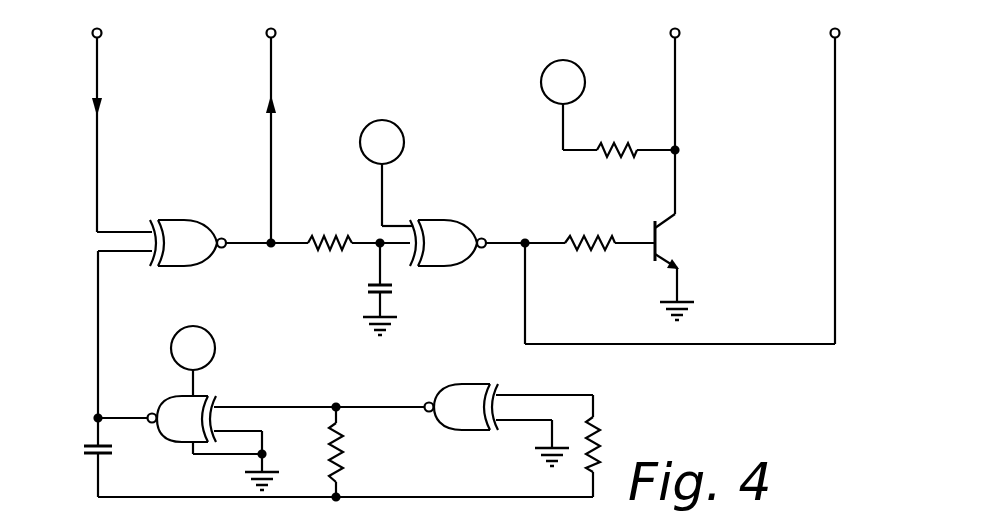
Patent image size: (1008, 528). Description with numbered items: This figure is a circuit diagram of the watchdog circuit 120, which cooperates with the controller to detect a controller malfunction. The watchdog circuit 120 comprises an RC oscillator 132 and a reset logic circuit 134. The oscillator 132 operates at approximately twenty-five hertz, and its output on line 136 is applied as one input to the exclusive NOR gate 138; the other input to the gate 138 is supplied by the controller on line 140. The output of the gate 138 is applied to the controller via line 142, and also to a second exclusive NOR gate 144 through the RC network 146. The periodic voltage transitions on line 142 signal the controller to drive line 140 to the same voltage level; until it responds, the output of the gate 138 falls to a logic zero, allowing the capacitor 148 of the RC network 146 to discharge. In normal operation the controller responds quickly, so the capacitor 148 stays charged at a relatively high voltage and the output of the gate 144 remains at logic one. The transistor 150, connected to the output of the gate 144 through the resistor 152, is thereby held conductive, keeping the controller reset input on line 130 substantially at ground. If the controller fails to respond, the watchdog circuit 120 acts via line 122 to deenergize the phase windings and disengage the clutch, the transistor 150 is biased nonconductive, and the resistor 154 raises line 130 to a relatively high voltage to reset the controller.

The watchdog circuit 120 is at (472, 70).
The line 122 is at (836, 263).
The line 130 is at (676, 107).
The RC oscillator 132 is at (308, 392).
The reset logic circuit 134 is at (412, 184).
The line 136 is at (98, 330).
The exclusive NOR gate 138 is at (197, 259).
The line 140 is at (98, 146).
The line 142 is at (272, 137).
The exclusive NOR gate 144 is at (460, 255).
The RC network 146 is at (358, 268).
The capacitor 148 is at (383, 297).
The transistor 150 is at (672, 222).
The resistor 152 is at (598, 238).
The resistor 154 is at (627, 142).